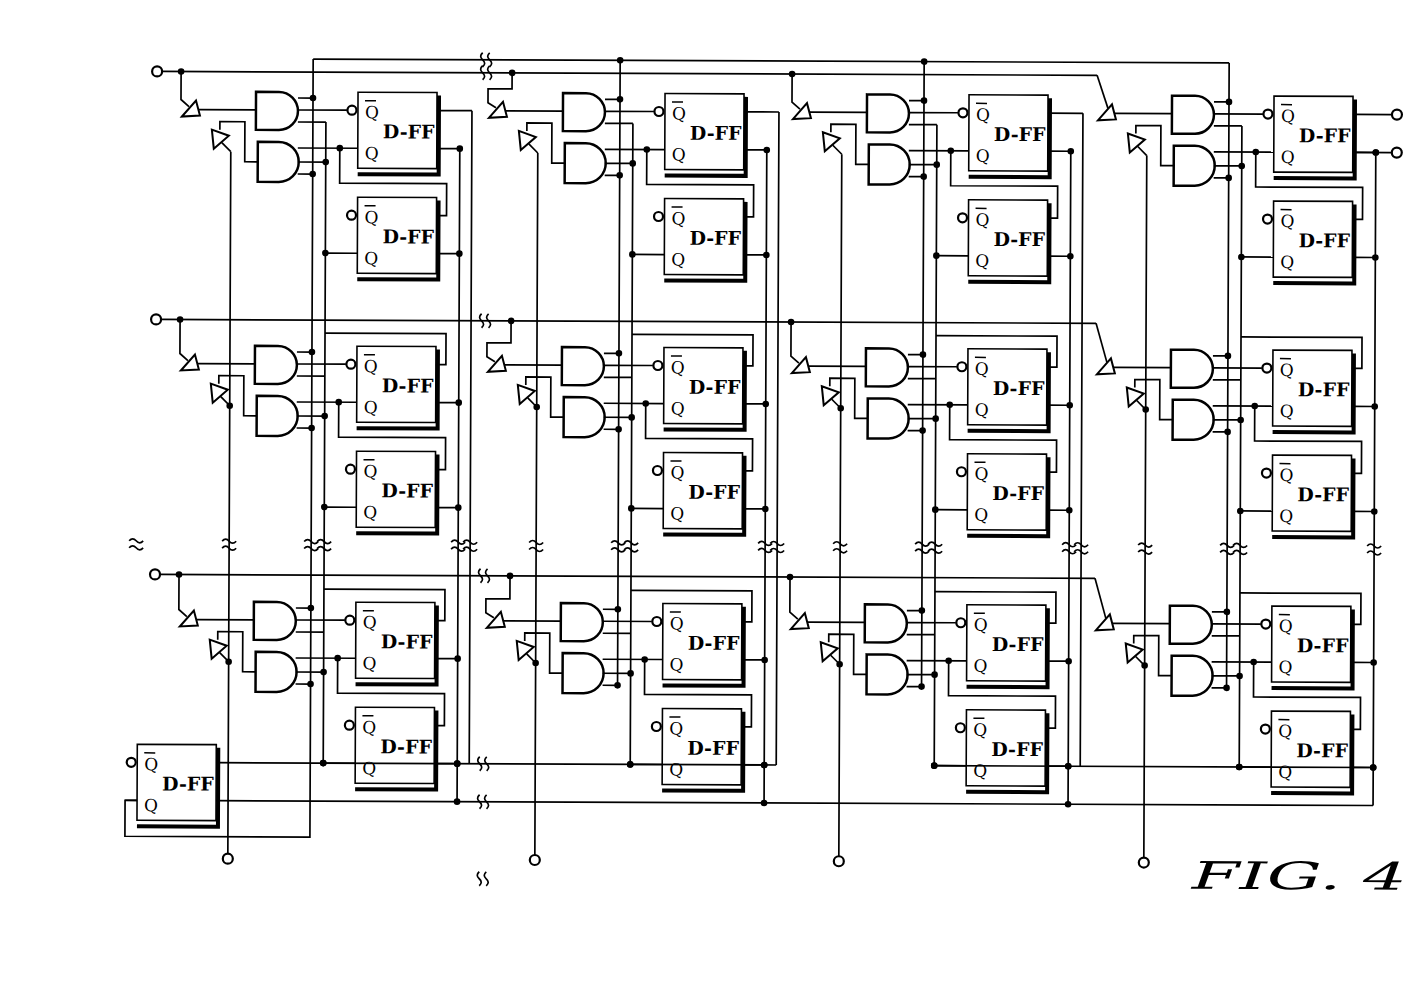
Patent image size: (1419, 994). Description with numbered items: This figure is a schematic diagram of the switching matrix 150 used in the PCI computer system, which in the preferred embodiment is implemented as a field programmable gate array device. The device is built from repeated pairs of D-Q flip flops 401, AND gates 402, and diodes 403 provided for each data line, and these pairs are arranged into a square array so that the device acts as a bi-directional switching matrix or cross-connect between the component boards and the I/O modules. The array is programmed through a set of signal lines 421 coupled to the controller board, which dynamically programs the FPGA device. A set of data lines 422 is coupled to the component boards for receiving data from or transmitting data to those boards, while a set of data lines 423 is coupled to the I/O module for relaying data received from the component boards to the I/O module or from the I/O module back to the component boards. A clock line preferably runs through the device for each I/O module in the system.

The switching matrix 150 is at (769, 470).
The D-Q flip flops 401 is at (1008, 346).
The AND gates 402 is at (880, 346).
The diodes 403 is at (802, 355).
The signal lines 421 is at (1406, 172).
The data lines 422 is at (1152, 868).
The data lines 423 is at (145, 591).